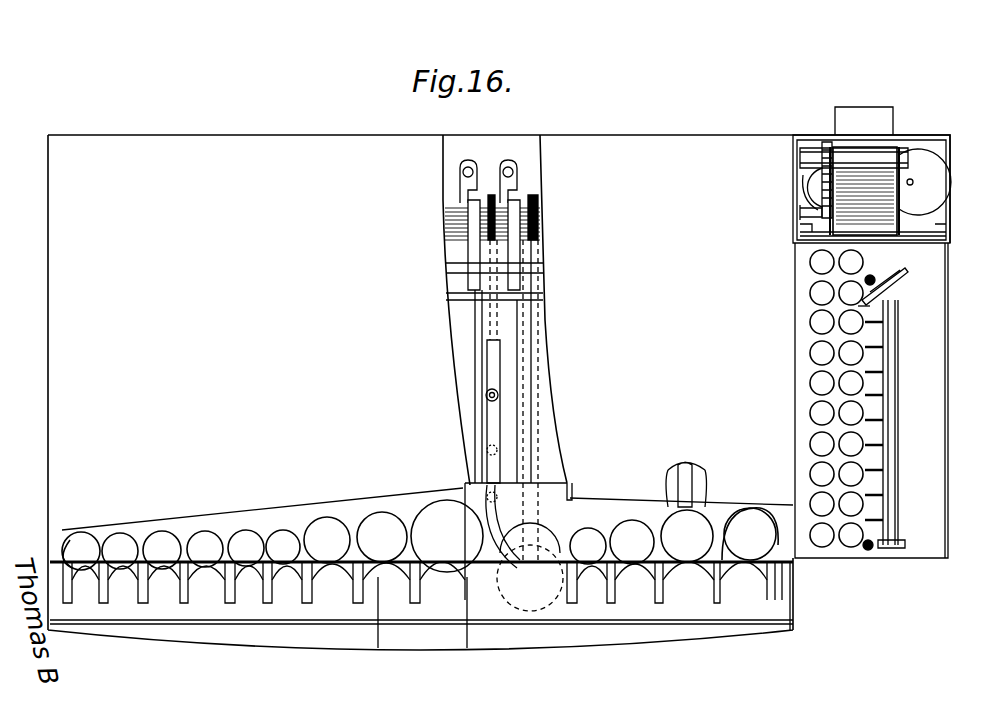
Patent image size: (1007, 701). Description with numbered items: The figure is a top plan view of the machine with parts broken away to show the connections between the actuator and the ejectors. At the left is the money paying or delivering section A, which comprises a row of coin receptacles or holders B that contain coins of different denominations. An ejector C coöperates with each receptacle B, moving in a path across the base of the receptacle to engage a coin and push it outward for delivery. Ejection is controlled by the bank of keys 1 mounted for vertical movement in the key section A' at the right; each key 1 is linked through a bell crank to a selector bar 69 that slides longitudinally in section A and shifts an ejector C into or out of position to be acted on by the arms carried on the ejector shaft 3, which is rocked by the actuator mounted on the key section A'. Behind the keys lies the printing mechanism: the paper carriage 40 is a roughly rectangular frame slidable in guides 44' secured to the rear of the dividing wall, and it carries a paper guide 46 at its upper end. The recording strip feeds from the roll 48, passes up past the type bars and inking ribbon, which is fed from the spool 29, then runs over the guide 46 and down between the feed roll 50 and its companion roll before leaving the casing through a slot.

The keys 1 is at (810, 352).
The ejector shaft 3 is at (530, 222).
The spool 29 is at (925, 188).
The paper carriage 40 is at (900, 240).
The guides 44' is at (869, 207).
The paper guide 46 is at (870, 225).
The recording strip roll 48 is at (893, 118).
The feed roll 50 is at (875, 172).
The selector bar 69 is at (540, 306).
The money paying or delivering section A is at (483, 392).
The key section A' is at (871, 420).
The coin receptacles or holders B is at (162, 540).
The ejector C is at (482, 300).